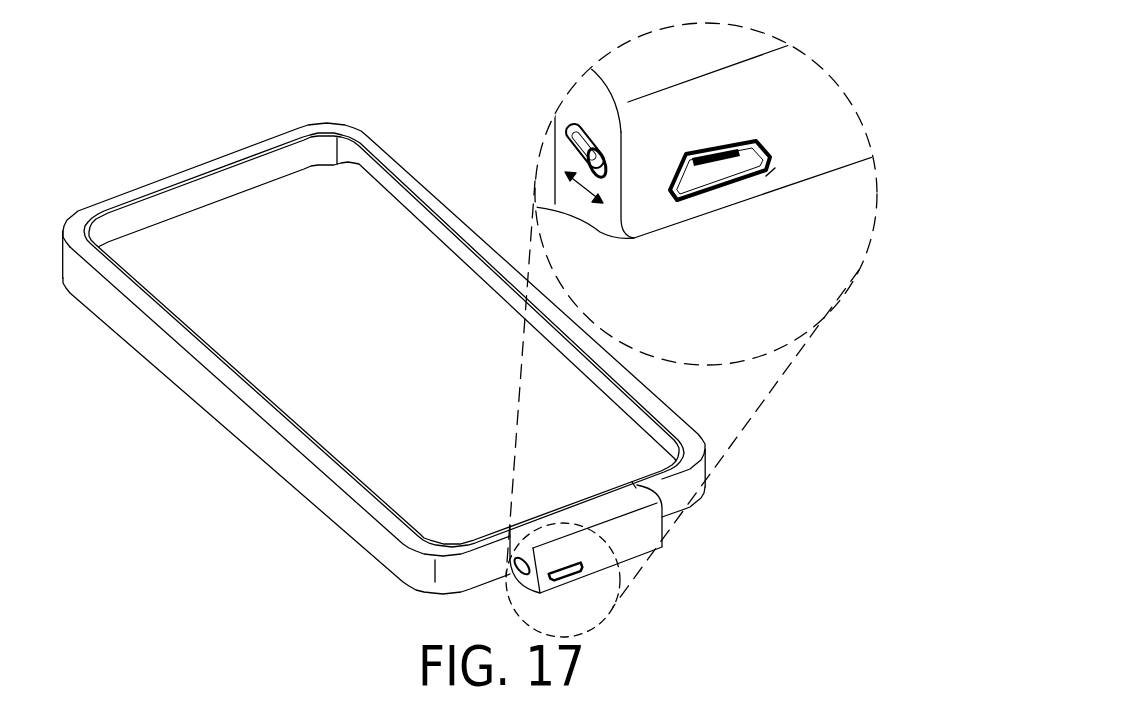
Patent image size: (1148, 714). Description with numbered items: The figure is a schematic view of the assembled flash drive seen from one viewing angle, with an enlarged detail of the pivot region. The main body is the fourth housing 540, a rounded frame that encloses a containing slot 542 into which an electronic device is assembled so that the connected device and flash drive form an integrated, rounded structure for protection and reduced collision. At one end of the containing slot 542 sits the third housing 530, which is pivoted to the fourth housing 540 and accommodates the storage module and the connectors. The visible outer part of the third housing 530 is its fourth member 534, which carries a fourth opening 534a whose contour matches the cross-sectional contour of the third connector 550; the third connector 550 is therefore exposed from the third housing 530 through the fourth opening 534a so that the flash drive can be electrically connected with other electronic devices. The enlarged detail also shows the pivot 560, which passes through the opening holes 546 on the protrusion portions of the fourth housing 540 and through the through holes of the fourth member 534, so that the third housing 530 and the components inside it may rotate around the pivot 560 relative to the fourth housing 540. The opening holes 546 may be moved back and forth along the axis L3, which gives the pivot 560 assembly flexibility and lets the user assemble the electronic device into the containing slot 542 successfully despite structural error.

The third housing 530 is at (657, 547).
The fourth member 534 is at (820, 117).
The fourth opening 534a is at (770, 170).
The fourth housing 540 is at (210, 388).
The containing slot 542 is at (197, 233).
The opening holes 546 is at (567, 145).
The third connector 550 is at (700, 200).
The pivot 560 is at (578, 117).
The axis L3 is at (580, 190).